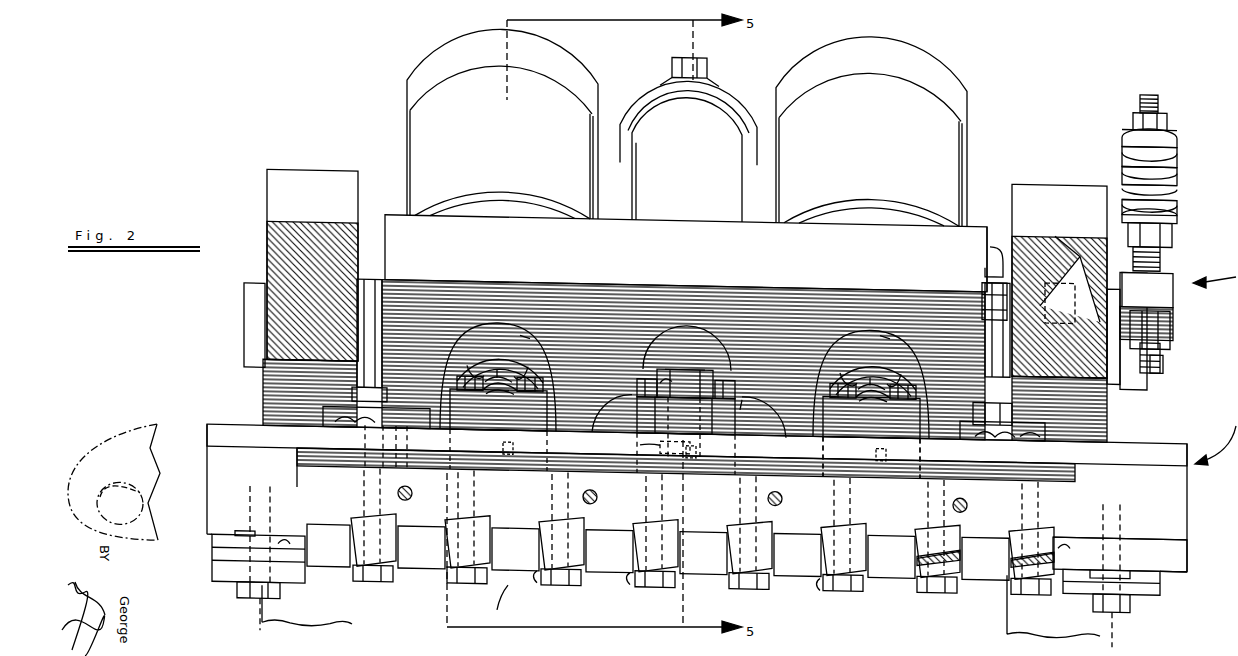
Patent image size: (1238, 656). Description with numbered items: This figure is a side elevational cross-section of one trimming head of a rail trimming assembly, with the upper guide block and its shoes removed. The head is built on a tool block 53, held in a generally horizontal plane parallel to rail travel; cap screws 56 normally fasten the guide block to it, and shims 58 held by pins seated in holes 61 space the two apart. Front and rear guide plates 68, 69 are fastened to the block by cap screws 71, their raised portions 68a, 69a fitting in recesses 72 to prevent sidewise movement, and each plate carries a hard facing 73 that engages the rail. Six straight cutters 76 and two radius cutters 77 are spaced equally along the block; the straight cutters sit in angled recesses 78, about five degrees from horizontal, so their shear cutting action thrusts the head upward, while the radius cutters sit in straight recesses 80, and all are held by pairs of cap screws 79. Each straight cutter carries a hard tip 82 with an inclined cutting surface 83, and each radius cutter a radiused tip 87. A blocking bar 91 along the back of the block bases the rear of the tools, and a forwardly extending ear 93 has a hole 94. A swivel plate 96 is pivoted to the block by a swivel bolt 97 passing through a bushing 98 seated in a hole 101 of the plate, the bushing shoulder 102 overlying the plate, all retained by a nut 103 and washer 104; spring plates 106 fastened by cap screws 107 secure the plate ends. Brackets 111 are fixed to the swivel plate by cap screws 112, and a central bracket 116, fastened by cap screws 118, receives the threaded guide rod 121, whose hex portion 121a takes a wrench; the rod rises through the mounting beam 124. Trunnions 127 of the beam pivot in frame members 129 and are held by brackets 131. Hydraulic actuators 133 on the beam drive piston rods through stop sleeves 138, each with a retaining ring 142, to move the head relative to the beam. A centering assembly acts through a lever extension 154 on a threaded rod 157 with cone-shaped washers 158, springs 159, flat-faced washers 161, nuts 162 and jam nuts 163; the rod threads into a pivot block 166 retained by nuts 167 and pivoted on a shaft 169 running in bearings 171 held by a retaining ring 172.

The tool block 53 is at (1165, 486).
The cap screws 56 is at (412, 487).
The shims 58 is at (1085, 457).
The holes 61 is at (513, 438).
The front guide plate 68 is at (212, 560).
The raised portion 68a is at (244, 526).
The rear guide plate 69 is at (1165, 552).
The raised portion 69a is at (1140, 546).
The cap screws 71 is at (258, 595).
The recesses 72 is at (282, 536).
The facing 73 is at (212, 547).
The straight cutters 76 is at (398, 542).
The radius cutters 77 is at (962, 542).
The recesses 78 is at (355, 560).
The cap screws 79 is at (378, 576).
The recesses 80 is at (1045, 515).
The tip 82 is at (352, 520).
The cutting surface 83 is at (670, 587).
The tip 87 is at (915, 512).
The blocking bar 91 is at (498, 602).
The ear 93 is at (112, 430).
The hole 94 is at (95, 515).
The swivel plate 96 is at (995, 432).
The swivel bolt 97 is at (665, 360).
The bushing 98 is at (692, 405).
The hole 101 is at (662, 435).
The shoulder 102 is at (645, 432).
The nut 103 is at (688, 354).
The washer 104 is at (655, 366).
The spring plates 106 is at (345, 418).
The cap screws 107 is at (370, 355).
The brackets 111 is at (492, 406).
The cap screws 112 is at (497, 358).
The bracket 116 is at (757, 425).
The cap screws 118 is at (685, 423).
The guide rod 121 is at (715, 330).
The hex portion 121a is at (710, 58).
The mounting beam 124 is at (672, 248).
The trunnions 127 is at (248, 320).
The frame members 129 is at (278, 241).
The brackets 131 is at (325, 197).
The hydraulic actuators 133 is at (512, 156).
The stop sleeve 138 is at (520, 325).
The retaining ring 142 is at (478, 360).
The lever extension 154 is at (1177, 150).
The threaded rod 157 is at (1158, 75).
The cone-shaped washers 158 is at (1177, 126).
The springs 159 is at (1122, 134).
The flat-faced washers 161 is at (1177, 116).
The nuts 162 is at (1133, 104).
The jam nuts 163 is at (1167, 96).
The pivot block 166 is at (1158, 273).
The nuts 167 is at (1170, 298).
The shaft 169 is at (971, 259).
The bearings 171 is at (1072, 230).
The retaining ring 172 is at (985, 246).